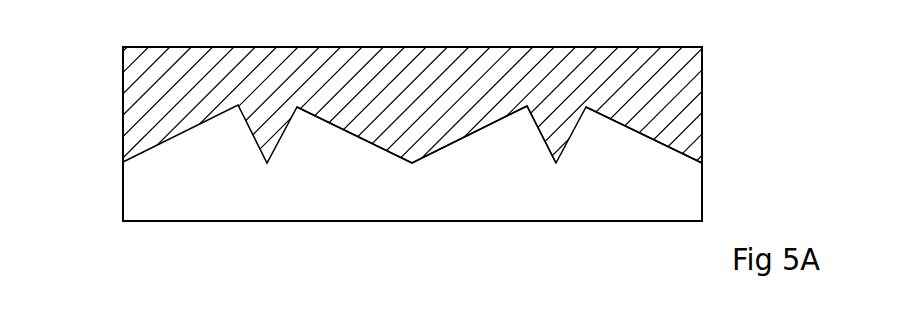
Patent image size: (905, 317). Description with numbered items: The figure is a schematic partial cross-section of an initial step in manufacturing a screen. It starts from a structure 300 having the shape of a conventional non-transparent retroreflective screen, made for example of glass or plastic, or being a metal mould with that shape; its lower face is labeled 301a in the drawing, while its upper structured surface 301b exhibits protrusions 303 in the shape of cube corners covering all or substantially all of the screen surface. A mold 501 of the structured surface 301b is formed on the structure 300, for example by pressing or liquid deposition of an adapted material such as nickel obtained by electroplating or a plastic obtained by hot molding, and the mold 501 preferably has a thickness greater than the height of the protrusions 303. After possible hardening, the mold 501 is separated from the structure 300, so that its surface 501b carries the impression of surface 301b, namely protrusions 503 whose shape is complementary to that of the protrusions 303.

The structure 300 is at (152, 183).
The bottom surface of substrate 301a is at (204, 232).
The surface 301b is at (189, 121).
The mold 501 is at (142, 104).
The surface 501b is at (350, 140).
The protrusions 503 is at (425, 127).
The protrusions 303 is at (612, 142).